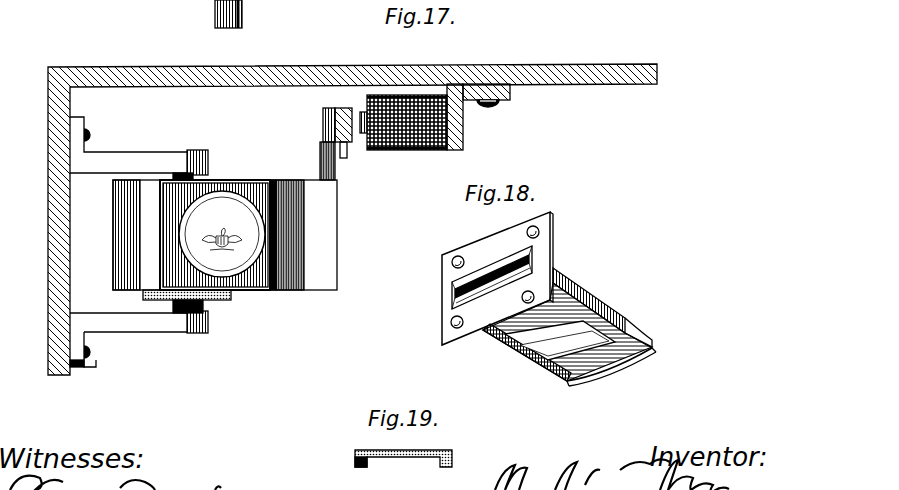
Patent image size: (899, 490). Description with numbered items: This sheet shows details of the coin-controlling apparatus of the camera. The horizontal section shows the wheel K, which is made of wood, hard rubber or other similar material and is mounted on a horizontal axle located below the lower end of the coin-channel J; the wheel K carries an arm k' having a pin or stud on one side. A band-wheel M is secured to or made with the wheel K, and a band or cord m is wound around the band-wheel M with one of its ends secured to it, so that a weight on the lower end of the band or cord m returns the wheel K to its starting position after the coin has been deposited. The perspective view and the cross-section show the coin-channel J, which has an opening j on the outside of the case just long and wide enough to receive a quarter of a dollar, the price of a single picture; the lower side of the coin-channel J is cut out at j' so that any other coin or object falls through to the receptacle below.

In FIG. 17, the wheel K is at (143, 222).
In FIG. 17, the arm k' is at (343, 152).
In FIG. 17, the band or cord m is at (232, 297).
In FIG. 17, the band-wheel M is at (224, 301).
In FIG. 18, the coin-channel J is at (574, 286).
In FIG. 19, the coin-channel J is at (417, 450).
In FIG. 18, the opening j is at (462, 277).
In FIG. 18, the chute pocket j' is at (560, 366).
In FIG. 19, the chute pocket j' is at (382, 473).